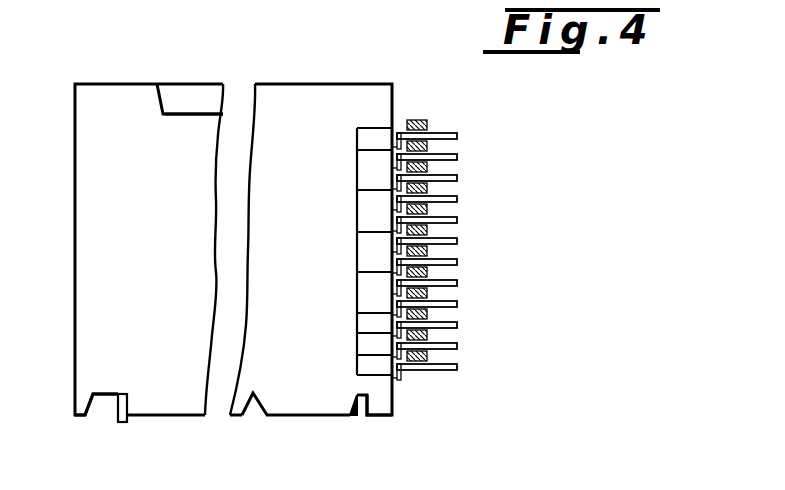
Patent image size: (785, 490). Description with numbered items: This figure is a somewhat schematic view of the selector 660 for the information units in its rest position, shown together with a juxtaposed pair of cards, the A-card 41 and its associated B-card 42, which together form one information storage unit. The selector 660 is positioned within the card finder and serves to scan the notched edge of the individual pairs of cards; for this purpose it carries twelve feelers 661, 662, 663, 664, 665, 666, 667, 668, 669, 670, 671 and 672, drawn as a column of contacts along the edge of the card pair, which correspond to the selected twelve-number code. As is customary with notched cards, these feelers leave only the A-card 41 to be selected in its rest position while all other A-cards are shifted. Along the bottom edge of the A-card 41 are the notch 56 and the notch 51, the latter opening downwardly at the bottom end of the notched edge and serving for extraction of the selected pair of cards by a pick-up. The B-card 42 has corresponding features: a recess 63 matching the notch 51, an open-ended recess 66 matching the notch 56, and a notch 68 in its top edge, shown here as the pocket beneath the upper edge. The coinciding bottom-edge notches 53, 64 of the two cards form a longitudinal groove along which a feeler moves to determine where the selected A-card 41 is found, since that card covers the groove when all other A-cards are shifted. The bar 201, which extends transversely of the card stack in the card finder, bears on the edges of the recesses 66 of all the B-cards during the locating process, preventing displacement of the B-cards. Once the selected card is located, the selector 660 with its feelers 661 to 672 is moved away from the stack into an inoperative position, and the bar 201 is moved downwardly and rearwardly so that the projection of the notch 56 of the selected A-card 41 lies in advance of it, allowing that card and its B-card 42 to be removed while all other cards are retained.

The first housing part 42 is at (122, 99).
The A-card 41 is at (182, 84).
The notch in top edge of B-card 68 is at (202, 113).
The notch along bottom edge of A-card 56 is at (100, 427).
The open ended recess of B-card 66 is at (107, 397).
The bar 201 is at (124, 420).
The notch 53 is at (264, 422).
The latching projection 64 is at (252, 408).
The recess of B-card 63 is at (352, 399).
The additional notch 51 is at (364, 400).
The selector 660 is at (494, 102).
The feeler 661 is at (457, 137).
The feeler 662 is at (457, 158).
The feeler 663 is at (457, 179).
The feeler 664 is at (457, 200).
The feeler 665 is at (457, 221).
The feeler 666 is at (457, 242).
The feeler 667 is at (457, 263).
The feeler 668 is at (457, 284).
The feeler 669 is at (457, 305).
The feeler 670 is at (457, 326).
The feeler 671 is at (457, 347).
The feeler 672 is at (457, 368).